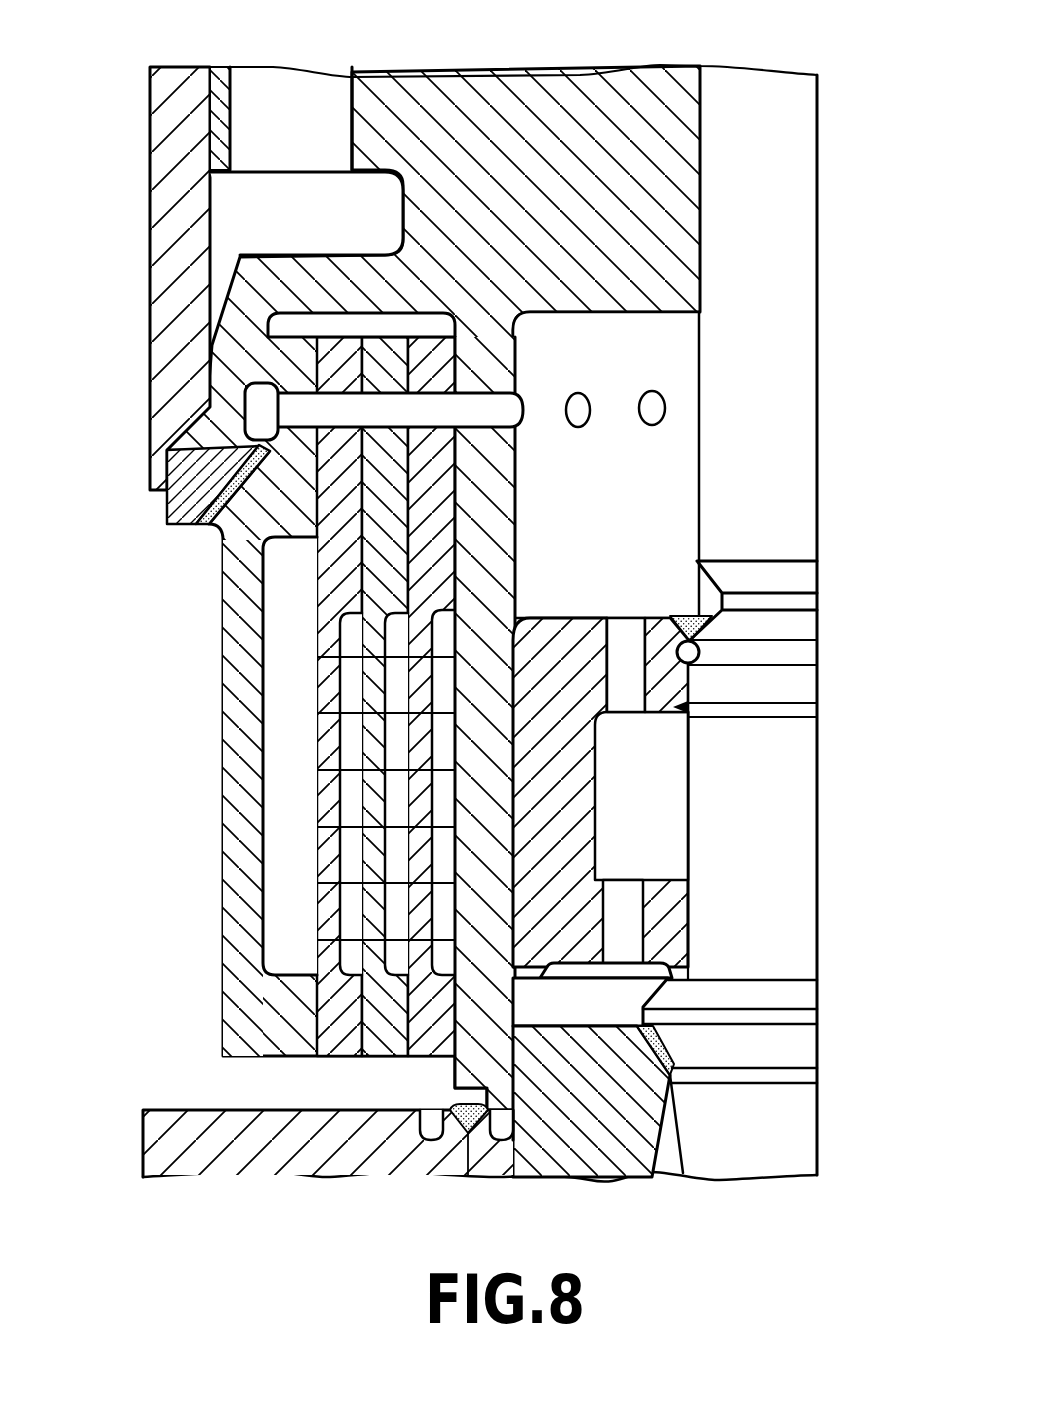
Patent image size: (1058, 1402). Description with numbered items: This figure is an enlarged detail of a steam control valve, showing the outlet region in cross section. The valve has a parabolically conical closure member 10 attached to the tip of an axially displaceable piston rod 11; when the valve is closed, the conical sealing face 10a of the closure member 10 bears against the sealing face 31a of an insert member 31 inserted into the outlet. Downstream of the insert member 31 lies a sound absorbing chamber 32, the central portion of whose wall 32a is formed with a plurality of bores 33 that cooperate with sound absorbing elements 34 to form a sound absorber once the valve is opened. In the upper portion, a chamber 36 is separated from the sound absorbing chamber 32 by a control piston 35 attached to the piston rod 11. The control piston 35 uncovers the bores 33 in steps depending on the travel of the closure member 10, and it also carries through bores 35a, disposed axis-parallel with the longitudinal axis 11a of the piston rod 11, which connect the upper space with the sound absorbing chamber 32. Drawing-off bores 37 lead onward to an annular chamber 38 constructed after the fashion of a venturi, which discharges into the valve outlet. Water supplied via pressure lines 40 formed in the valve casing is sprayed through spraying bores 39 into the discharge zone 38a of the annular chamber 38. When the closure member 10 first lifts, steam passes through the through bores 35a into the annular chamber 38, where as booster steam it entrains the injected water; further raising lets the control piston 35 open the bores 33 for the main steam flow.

The closure member 10 is at (803, 1133).
The conical sealing face 10a is at (663, 1053).
The piston rod 11 is at (775, 78).
The longitudinal axis 11a is at (818, 270).
The insert member 31 is at (505, 1165).
The sealing face 31a is at (655, 995).
The sound absorbing chamber 32 is at (620, 1000).
The wall 32a is at (565, 970).
The bores 33 is at (527, 895).
The sound absorbing elements 34 is at (323, 796).
The control piston 35 is at (660, 630).
The through bores 35a is at (628, 697).
The chamber 36 is at (673, 533).
The drawing-off bores 37 is at (293, 412).
The annular chamber 38 is at (257, 420).
The discharge zone 38a is at (187, 522).
The spraying bores 39 is at (208, 468).
The pressure lines 40 is at (232, 220).